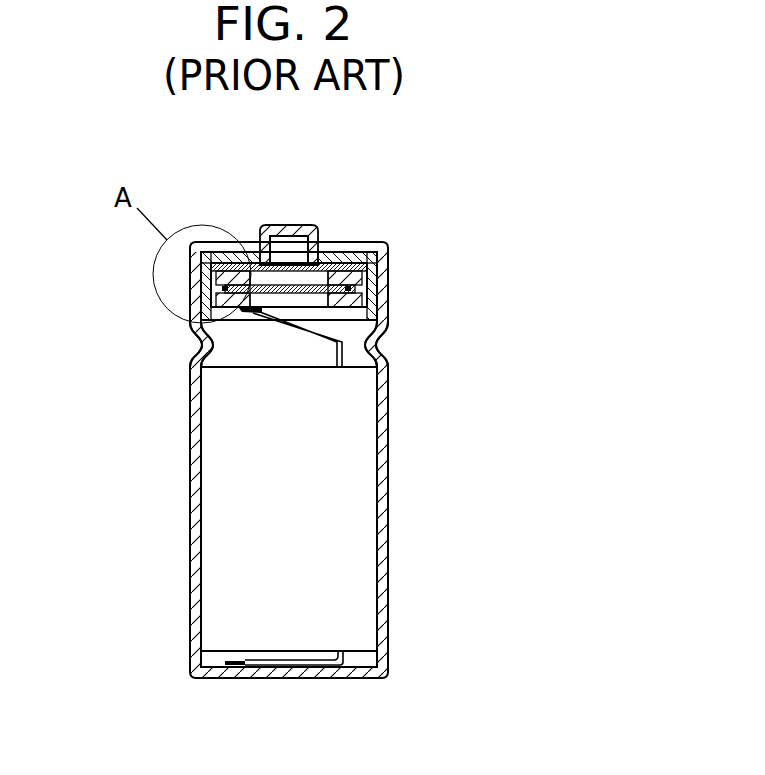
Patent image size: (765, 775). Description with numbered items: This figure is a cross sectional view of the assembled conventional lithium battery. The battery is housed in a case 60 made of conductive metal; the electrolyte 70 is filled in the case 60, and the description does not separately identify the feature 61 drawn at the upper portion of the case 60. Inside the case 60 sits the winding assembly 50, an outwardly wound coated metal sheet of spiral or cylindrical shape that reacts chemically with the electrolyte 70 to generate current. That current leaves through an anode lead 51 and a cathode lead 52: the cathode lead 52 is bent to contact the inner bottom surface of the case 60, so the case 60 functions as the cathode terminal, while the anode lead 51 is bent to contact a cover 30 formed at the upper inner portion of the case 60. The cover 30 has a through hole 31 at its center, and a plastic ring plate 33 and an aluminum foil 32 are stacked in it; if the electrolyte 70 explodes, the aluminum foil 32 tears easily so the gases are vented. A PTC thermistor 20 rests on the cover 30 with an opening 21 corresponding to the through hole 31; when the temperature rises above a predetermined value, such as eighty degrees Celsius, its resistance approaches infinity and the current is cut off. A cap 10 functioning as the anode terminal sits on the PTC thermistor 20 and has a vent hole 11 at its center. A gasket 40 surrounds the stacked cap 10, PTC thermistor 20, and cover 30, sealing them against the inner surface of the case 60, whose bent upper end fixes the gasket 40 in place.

The cap 10 is at (308, 225).
The vent hole 11 is at (283, 272).
The PTC thermistor 20 is at (230, 268).
The opening 21 is at (252, 270).
The cover 30 is at (363, 278).
The through hole 31 is at (312, 280).
The aluminum foil 32 is at (350, 288).
The ring plate 33 is at (378, 312).
The gasket 40 is at (203, 280).
The winding assembly 50 is at (228, 518).
The anode lead 51 is at (385, 358).
The cathode lead 52 is at (345, 658).
The case 60 is at (191, 587).
The bead 61 is at (203, 343).
The electrolyte 70 is at (212, 658).